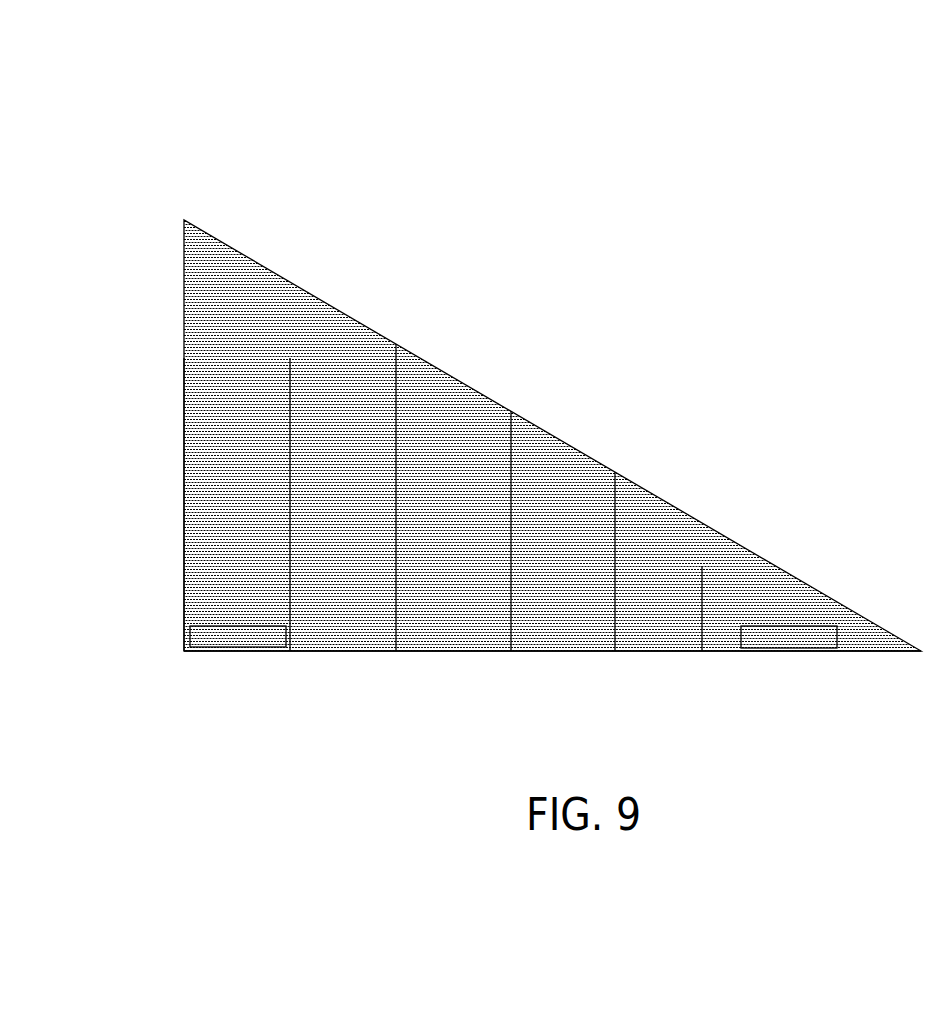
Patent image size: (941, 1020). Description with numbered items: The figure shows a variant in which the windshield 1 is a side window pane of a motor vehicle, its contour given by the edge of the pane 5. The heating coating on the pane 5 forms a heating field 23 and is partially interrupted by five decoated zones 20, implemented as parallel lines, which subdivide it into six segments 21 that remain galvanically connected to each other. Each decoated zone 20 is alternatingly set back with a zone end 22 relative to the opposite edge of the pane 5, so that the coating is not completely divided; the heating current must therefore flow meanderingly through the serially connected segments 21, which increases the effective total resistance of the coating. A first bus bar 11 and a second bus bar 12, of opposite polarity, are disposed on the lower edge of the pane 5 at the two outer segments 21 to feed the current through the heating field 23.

The windshield 1 is at (80, 125).
The pane 5 is at (427, 645).
The first bus bar 11 is at (215, 628).
The second bus bar 12 is at (798, 628).
The decoated zone 20 is at (387, 455).
The segment 21 is at (236, 433).
The zone end 22 is at (283, 353).
The heating field 23 is at (212, 532).